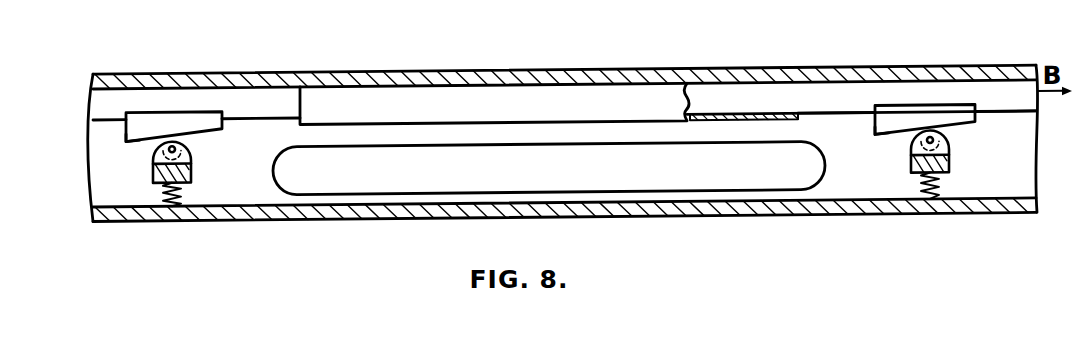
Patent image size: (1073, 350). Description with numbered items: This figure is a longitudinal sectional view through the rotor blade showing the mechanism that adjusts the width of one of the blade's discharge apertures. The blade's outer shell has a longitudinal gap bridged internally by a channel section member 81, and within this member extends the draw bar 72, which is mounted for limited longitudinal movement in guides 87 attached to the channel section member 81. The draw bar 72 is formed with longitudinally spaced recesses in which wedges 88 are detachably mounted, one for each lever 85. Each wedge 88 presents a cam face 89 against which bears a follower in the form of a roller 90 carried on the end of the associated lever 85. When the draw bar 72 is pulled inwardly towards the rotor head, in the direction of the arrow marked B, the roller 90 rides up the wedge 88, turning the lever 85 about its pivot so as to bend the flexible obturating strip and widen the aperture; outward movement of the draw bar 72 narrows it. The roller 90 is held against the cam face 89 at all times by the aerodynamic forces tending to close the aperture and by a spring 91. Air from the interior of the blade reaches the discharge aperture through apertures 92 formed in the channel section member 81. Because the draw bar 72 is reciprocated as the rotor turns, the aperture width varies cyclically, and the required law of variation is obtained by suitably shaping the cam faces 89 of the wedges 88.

The draw bar 72 is at (800, 94).
The channel section member 81 is at (963, 76).
The lever 85 is at (192, 172).
The guides 87 is at (520, 92).
The wedges 88 is at (177, 116).
The cam face 89 is at (135, 141).
The roller 90 is at (184, 138).
The spring 91 is at (182, 196).
The apertures 92 is at (375, 183).